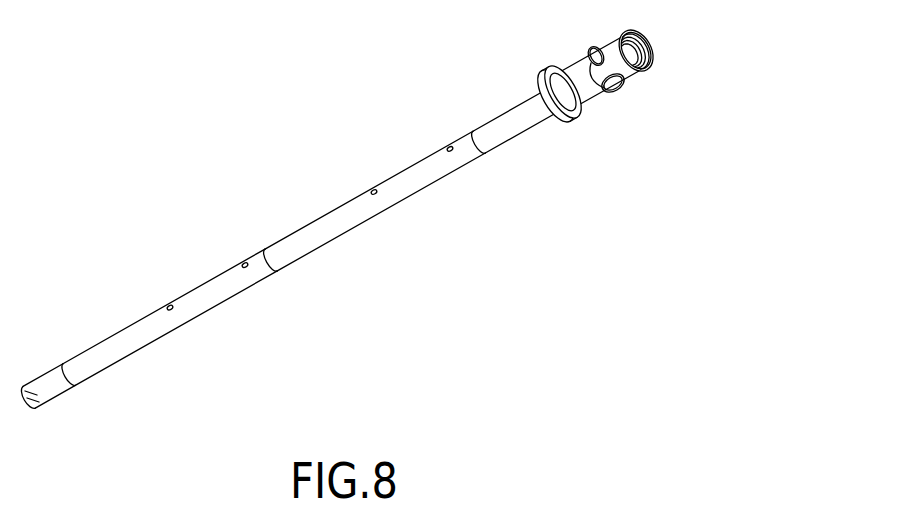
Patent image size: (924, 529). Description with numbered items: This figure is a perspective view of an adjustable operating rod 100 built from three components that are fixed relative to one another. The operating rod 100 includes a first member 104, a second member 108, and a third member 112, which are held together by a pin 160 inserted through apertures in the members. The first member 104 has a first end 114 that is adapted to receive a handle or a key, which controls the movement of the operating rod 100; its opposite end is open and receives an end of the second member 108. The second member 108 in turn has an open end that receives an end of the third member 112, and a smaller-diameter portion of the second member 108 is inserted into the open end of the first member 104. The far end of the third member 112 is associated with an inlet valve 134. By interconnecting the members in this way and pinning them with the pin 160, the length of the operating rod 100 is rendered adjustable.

The operating rod 100 is at (340, 236).
The first member 104 is at (205, 291).
The second member 108 is at (415, 171).
The third member 112 is at (518, 128).
The first end 114 is at (37, 408).
The inlet valve 134 is at (622, 17).
The pin 160 is at (169, 311).